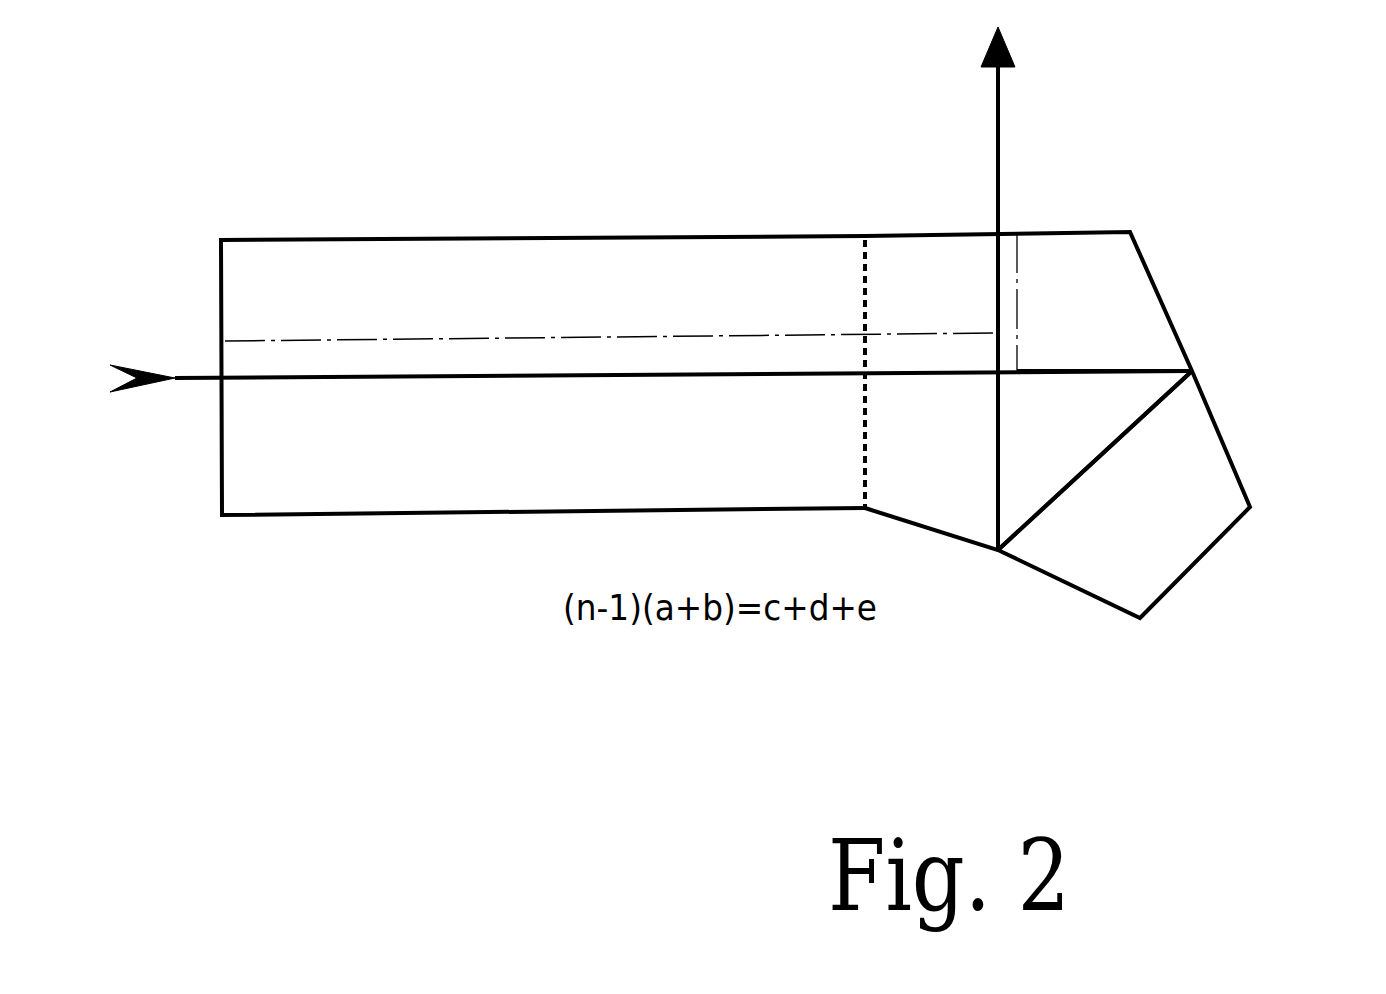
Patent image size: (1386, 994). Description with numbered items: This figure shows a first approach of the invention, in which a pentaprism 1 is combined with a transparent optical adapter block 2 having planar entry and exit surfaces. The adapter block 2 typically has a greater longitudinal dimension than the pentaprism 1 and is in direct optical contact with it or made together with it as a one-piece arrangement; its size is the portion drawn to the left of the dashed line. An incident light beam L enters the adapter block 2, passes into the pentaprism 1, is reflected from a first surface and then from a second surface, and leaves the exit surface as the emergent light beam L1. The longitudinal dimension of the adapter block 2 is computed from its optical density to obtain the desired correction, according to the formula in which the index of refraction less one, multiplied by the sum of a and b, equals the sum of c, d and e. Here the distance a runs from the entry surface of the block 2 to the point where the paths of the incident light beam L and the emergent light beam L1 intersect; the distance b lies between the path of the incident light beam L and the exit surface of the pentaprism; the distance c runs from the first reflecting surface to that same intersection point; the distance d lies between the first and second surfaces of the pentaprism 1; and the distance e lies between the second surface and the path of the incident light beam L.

The pentaprism 1 is at (1133, 465).
The adapter block 2 is at (558, 250).
The incident light beam L is at (198, 385).
The emergent light beam L1 is at (1005, 142).
The distance from entry surface to beam intersection a is at (610, 339).
The distance between incident beam path and exit surface b is at (1024, 302).
The distance from first surface to beam intersection c is at (1104, 379).
The distance between first and second surfaces d is at (1095, 460).
The distance between second surface and incident beam path e is at (1009, 460).